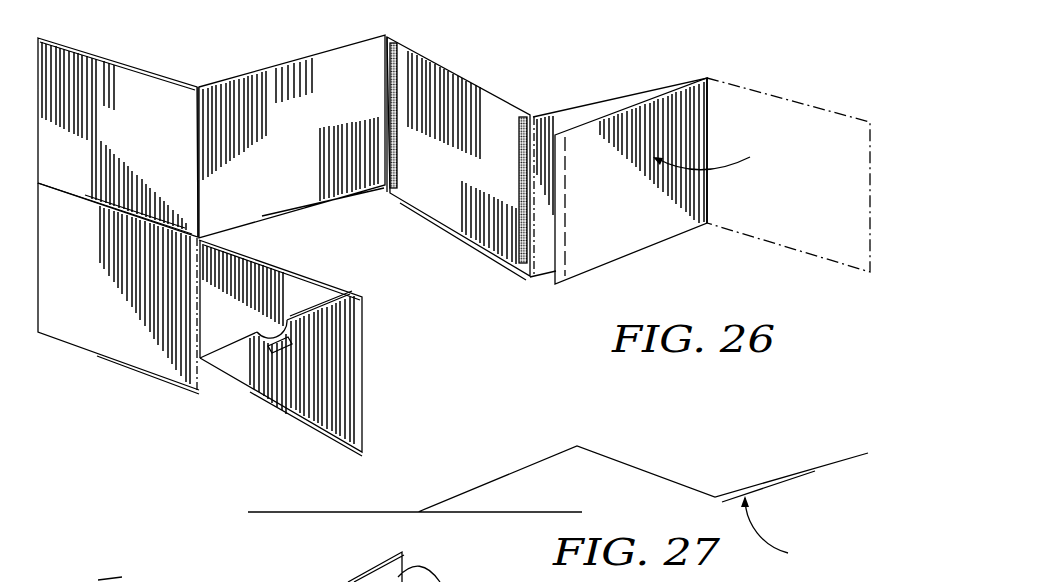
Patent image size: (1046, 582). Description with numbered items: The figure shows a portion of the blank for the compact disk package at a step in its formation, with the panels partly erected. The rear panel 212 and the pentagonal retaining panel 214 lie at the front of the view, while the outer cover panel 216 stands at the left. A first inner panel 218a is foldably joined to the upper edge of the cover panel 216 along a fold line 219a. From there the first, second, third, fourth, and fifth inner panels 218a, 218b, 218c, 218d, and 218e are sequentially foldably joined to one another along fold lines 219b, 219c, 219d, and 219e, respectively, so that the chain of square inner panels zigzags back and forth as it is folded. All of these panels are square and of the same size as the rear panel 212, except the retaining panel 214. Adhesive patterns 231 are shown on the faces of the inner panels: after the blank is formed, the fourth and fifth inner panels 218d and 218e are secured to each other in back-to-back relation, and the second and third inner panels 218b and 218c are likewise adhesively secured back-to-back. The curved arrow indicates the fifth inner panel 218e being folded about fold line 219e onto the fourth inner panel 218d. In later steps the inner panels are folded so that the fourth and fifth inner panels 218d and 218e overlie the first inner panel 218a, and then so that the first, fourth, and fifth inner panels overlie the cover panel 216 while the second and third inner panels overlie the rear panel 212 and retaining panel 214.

The rear panel 212 is at (312, 288).
The retaining panel 214 is at (358, 329).
The outer cover panel 216 is at (128, 305).
The first inner panel 218a is at (143, 138).
The second inner panel 218b is at (315, 153).
The third inner panel 218c is at (487, 178).
The fourth inner panel 218d is at (542, 268).
The fifth inner panel 218e is at (663, 210).
The fold line 219a is at (64, 190).
The fold line 219b is at (199, 86).
The fold line 219c is at (388, 38).
The fold line 219d is at (533, 117).
The fold line 219e is at (708, 124).
The adhesive pattern 231 is at (391, 68).